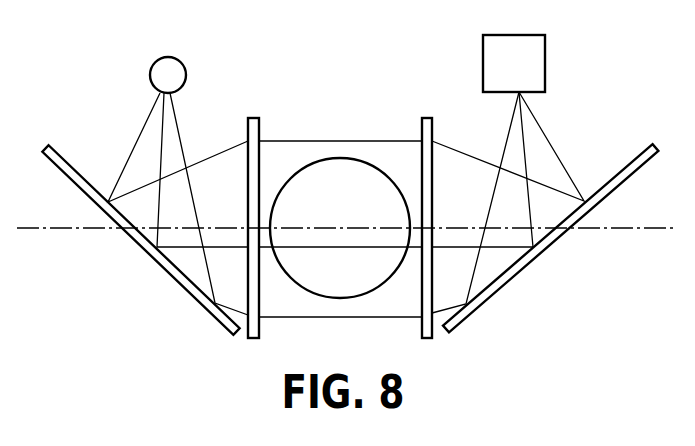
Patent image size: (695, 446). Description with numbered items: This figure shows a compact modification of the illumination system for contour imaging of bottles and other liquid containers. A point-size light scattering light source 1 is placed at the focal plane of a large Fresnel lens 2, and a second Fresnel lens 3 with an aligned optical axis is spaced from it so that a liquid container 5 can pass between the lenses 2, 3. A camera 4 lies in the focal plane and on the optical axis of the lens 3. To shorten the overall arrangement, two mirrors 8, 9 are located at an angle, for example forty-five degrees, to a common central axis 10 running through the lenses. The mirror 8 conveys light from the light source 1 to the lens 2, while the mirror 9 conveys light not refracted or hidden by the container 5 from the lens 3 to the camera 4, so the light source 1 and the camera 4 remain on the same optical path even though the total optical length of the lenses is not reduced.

The light source 1 is at (153, 67).
The lens 2 is at (252, 118).
The lens 3 is at (425, 117).
The camera 4 is at (538, 60).
The liquid container 5 is at (345, 167).
The mirror 8 is at (188, 291).
The mirror 9 is at (508, 278).
The common central axis 10 is at (627, 240).